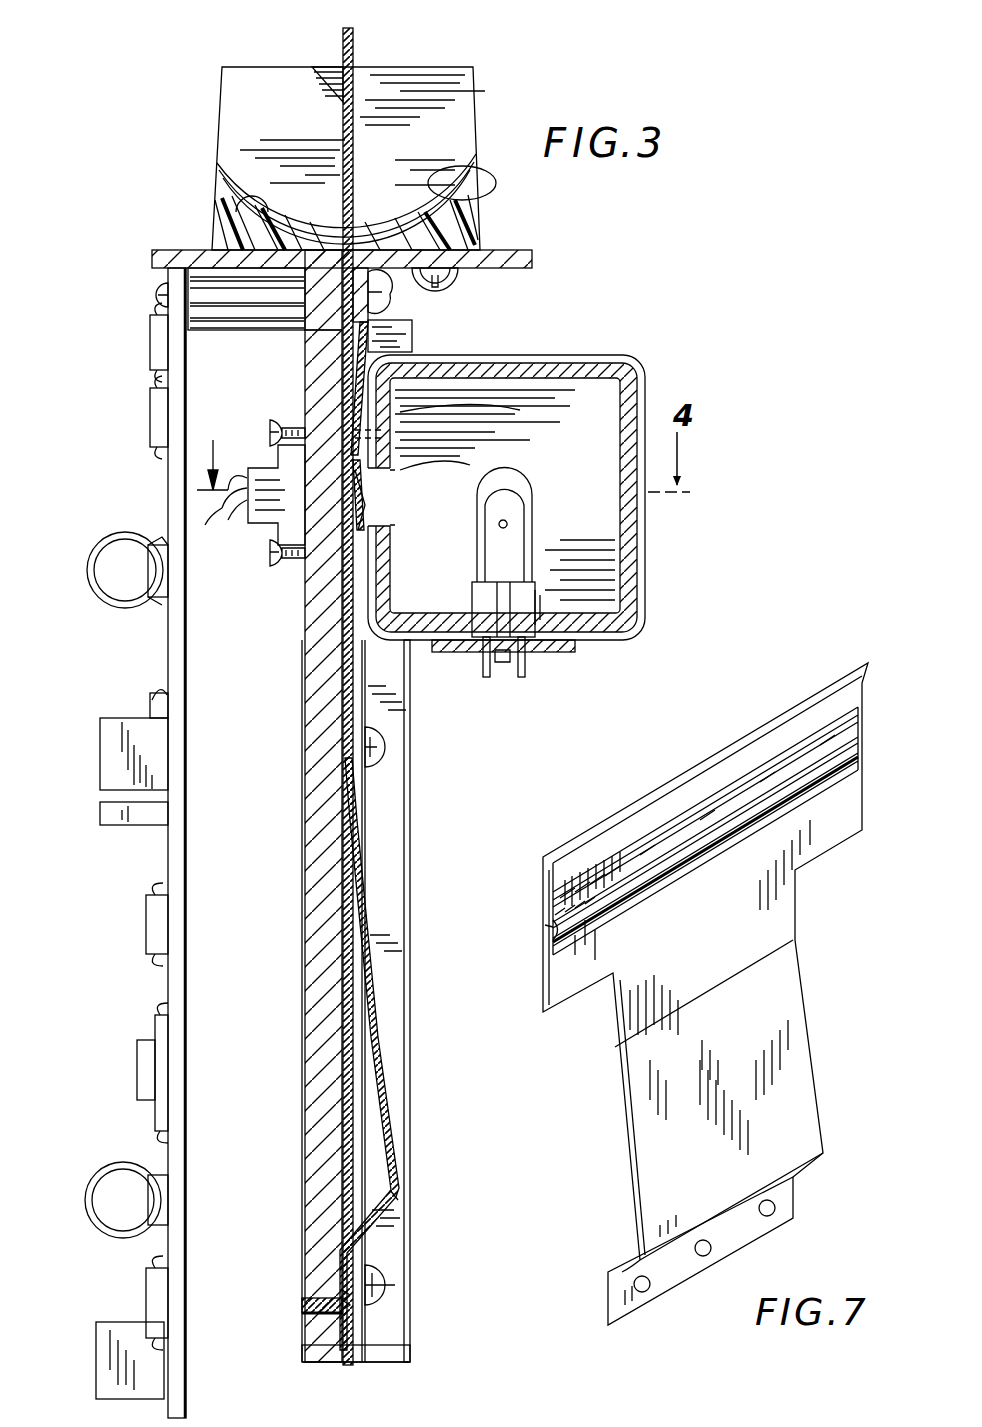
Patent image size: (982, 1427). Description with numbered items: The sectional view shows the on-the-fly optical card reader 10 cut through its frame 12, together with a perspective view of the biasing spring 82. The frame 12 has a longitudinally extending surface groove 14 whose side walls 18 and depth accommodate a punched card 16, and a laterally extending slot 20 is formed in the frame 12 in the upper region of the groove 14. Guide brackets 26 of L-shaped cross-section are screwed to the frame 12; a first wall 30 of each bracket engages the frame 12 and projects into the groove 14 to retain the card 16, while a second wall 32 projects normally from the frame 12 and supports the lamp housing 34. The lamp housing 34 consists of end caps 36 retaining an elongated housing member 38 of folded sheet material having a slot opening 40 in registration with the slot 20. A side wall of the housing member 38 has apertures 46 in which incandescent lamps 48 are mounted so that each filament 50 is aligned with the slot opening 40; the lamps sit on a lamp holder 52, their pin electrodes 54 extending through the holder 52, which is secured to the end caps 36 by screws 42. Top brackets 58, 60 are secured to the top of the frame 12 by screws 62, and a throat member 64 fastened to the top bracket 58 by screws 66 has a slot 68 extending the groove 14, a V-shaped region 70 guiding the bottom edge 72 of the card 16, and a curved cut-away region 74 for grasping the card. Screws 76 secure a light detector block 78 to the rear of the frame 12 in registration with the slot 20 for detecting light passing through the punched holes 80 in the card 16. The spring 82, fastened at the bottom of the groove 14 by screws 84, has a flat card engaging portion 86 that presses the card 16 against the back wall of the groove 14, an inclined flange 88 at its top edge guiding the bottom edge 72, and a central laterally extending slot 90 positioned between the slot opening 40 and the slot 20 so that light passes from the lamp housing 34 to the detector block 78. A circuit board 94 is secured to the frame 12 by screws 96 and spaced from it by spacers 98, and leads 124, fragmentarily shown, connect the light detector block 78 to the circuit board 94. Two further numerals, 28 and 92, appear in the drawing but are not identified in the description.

In FIG. 3, the on-the-fly optical card reader 10 is at (432, 818).
In FIG. 3, the frame 12 is at (312, 1343).
In FIG. 3, the surface groove 14 is at (305, 1158).
In FIG. 3, the punched card 16 is at (355, 44).
In FIG. 3, the side walls 18 is at (302, 1108).
In FIG. 3, the laterally extending slot 20 is at (335, 432).
In FIG. 3, the guide brackets 26 is at (270, 433).
In FIG. 3, the screw 28 is at (385, 1278).
In FIG. 3, the first wall 30 is at (355, 1345).
In FIG. 3, the second wall 32 is at (395, 1222).
In FIG. 3, the lamp housing 34 is at (532, 475).
In FIG. 3, the end caps 36 is at (620, 360).
In FIG. 3, the elongated housing member 38 is at (630, 386).
In FIG. 3, the slot opening 40 is at (396, 466).
In FIG. 3, the screws 42 is at (500, 690).
In FIG. 3, the apertures 46 is at (477, 614).
In FIG. 3, the incandescent lamp 48 is at (545, 594).
In FIG. 3, the filament 50 is at (535, 500).
In FIG. 3, the lamp holder 52 is at (568, 652).
In FIG. 3, the pin electrodes 54 is at (485, 680).
In FIG. 3, the top bracket 58 is at (532, 259).
In FIG. 3, the top bracket 60 is at (172, 258).
In FIG. 3, the screws 62 is at (392, 301).
In FIG. 3, the throat member 64 is at (472, 82).
In FIG. 3, the screws 66 is at (455, 285).
In FIG. 3, the slot 68 is at (352, 205).
In FIG. 3, the V-shaped region 70 is at (358, 84).
In FIG. 3, the bottom edge 72 is at (302, 773).
In FIG. 3, the curved cut-away region 74 is at (470, 180).
In FIG. 3, the screws 76 is at (276, 566).
In FIG. 3, the light detector block 78 is at (270, 522).
In FIG. 3, the punched holes 80 is at (172, 180).
In FIG. 3, the spring 82 is at (386, 1063).
In FIG. 7, the spring 82 is at (818, 1032).
In FIG. 3, the screws 84 is at (352, 1322).
In FIG. 3, the card engaging portion 86 is at (345, 375).
In FIG. 7, the card engaging portion 86 is at (856, 704).
In FIG. 3, the inclined flange 88 is at (404, 330).
In FIG. 7, the inclined flange 88 is at (850, 676).
In FIG. 3, the laterally extending slot 90 is at (362, 481).
In FIG. 7, the laterally extending slot 90 is at (548, 926).
In FIG. 3, the filter strip 92 is at (492, 406).
In FIG. 7, the filter strip 92 is at (782, 772).
In FIG. 3, the circuit board 94 is at (183, 632).
In FIG. 3, the screws 96 is at (160, 291).
In FIG. 3, the spacers 98 is at (232, 305).
In FIG. 3, the leads 124 is at (221, 501).